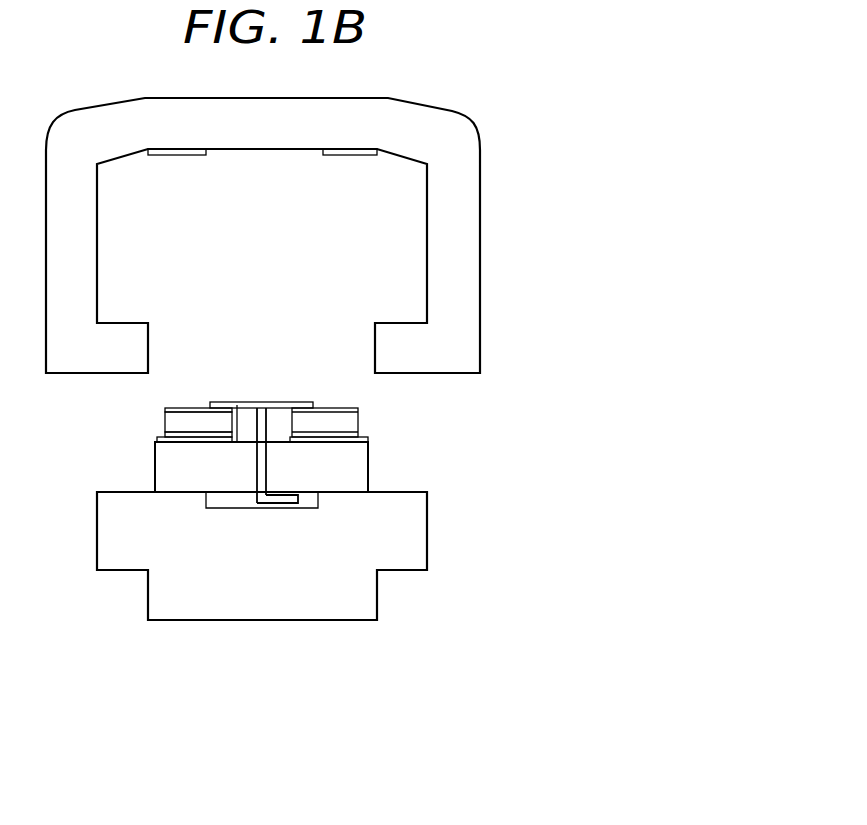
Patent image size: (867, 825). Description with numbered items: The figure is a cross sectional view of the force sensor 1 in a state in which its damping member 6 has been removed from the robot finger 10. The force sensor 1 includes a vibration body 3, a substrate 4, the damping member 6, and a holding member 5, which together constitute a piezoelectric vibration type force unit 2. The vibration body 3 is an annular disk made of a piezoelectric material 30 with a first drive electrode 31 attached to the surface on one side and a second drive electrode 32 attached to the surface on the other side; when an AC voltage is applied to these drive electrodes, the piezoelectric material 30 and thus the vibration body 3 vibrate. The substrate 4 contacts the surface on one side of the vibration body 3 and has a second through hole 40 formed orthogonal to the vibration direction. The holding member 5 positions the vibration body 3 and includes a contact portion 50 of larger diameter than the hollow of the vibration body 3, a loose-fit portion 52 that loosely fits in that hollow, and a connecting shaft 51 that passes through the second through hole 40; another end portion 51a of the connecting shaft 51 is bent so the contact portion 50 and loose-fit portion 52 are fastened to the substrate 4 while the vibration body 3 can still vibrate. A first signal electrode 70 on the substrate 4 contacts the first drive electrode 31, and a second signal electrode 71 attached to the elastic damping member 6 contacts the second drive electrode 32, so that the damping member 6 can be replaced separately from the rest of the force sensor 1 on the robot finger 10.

The force sensor 1 is at (502, 368).
The force unit 2 is at (343, 392).
The vibration body 3 is at (222, 293).
The piezoelectric material 30 is at (168, 433).
The first drive electrode 31 is at (187, 408).
The second drive electrode 32 is at (191, 423).
The substrate 4 is at (360, 465).
The second through hole 40 is at (258, 478).
The holding member 5 is at (328, 341).
The contact portion 50 is at (295, 402).
The connecting shaft 51 is at (277, 403).
The another end portion 51a is at (282, 503).
The loose-fit portion 52 is at (247, 402).
The damping member 6 is at (463, 246).
The first signal electrode 70 is at (182, 441).
The second signal electrode 71 is at (177, 157).
The robot finger 10 is at (178, 612).